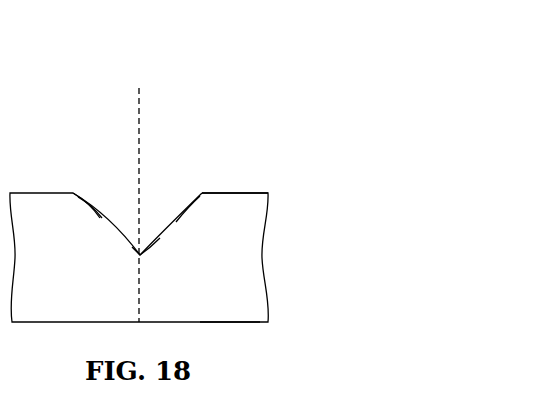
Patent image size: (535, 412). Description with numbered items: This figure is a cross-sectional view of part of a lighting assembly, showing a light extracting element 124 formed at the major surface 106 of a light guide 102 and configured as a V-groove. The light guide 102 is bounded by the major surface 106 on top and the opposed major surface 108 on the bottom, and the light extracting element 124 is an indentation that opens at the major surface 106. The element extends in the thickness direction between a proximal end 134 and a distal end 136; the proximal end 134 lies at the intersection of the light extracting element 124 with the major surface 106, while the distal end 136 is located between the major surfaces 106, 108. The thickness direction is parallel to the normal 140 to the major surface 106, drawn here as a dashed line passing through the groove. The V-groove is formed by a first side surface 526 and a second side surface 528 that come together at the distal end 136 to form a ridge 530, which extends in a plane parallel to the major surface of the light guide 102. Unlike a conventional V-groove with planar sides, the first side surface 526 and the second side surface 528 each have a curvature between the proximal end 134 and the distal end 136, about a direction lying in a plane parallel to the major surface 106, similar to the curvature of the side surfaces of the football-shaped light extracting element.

The light guide 102 is at (274, 220).
The major surface 106 is at (225, 193).
The major surface 108 is at (232, 322).
The light extracting element 124 is at (102, 168).
The proximal end 134 is at (71, 188).
The distal end 136 is at (132, 261).
The normal 140 is at (140, 163).
The first side surface 526 is at (80, 203).
The second side surface 528 is at (195, 211).
The ridge 530 is at (141, 256).